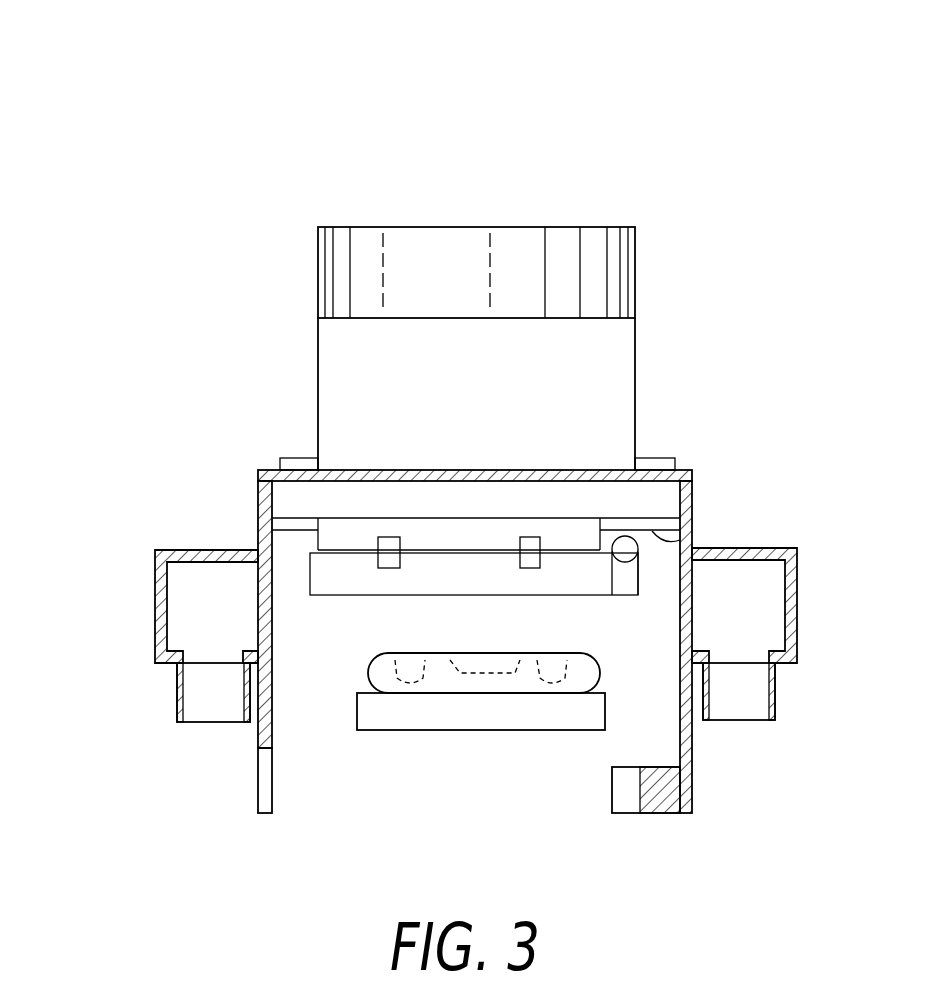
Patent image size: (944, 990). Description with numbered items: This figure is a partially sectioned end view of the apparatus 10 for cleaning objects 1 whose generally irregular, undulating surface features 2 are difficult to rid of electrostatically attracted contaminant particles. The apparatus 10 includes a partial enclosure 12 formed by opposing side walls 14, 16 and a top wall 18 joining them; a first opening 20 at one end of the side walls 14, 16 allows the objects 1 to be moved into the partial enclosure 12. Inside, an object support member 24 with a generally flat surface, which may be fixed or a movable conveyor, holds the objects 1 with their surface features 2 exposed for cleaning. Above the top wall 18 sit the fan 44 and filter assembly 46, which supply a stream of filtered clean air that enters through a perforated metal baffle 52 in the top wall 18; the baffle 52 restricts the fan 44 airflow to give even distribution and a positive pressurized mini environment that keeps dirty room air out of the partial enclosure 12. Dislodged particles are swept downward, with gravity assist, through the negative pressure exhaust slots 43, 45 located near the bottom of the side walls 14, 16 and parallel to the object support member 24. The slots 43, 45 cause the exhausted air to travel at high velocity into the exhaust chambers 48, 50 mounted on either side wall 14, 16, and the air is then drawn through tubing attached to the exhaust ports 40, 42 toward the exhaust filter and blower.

The apparatus 10 is at (700, 148).
The partial enclosure 12 is at (496, 612).
The side wall 14 is at (692, 775).
The side wall 16 is at (260, 740).
The top wall 18 is at (690, 535).
The first opening 20 is at (385, 790).
The object support member 24 is at (508, 715).
The exhaust port 40 is at (200, 714).
The exhaust port 42 is at (745, 707).
The exhaust slot 43 is at (250, 630).
The fan 44 is at (515, 227).
The exhaust slot 45 is at (700, 628).
The filter assembly 46 is at (325, 368).
The exhaust chamber 48 is at (797, 605).
The exhaust chamber 50 is at (155, 612).
The perforated metal baffle 52 is at (590, 468).
The object 1 is at (600, 670).
The surface features 2 is at (468, 663).